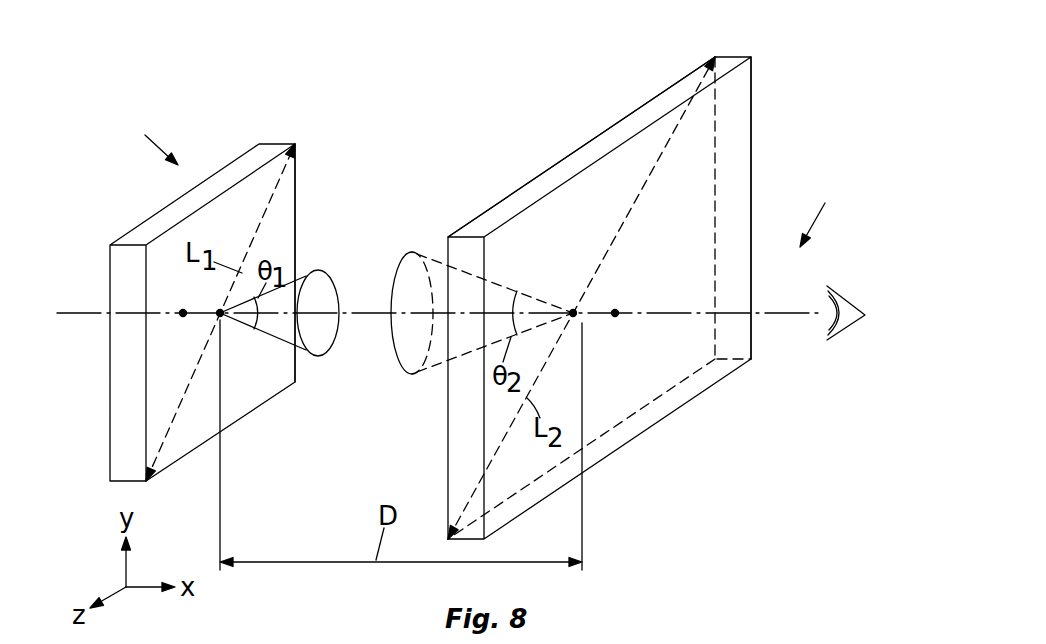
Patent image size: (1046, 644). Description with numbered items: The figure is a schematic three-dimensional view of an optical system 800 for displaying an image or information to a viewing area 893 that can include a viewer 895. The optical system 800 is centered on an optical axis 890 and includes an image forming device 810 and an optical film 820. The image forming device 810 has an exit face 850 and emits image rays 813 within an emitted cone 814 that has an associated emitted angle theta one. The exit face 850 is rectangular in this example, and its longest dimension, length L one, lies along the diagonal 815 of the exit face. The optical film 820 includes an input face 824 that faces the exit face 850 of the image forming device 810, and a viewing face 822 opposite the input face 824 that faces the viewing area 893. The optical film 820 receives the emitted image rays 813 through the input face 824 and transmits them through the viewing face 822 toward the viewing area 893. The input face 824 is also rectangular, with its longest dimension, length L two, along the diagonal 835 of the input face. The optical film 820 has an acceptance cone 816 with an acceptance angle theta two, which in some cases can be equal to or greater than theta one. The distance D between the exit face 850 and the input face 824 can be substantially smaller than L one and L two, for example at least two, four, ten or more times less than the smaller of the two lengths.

The optical system 800 is at (134, 138).
The image forming device 810 is at (262, 148).
The image rays 813 is at (270, 328).
The emitted cone 814 is at (330, 273).
The diagonal of the exit face 815 is at (168, 428).
The acceptance cone 816 is at (430, 377).
The optical film 820 is at (728, 55).
The viewing face 822 is at (740, 108).
The input face 824 is at (650, 103).
The diagonal of the input face 835 is at (627, 220).
The exit face 850 is at (288, 197).
The optical axis 890 is at (63, 311).
The viewing area 893 is at (830, 211).
The viewer 895 is at (847, 300).